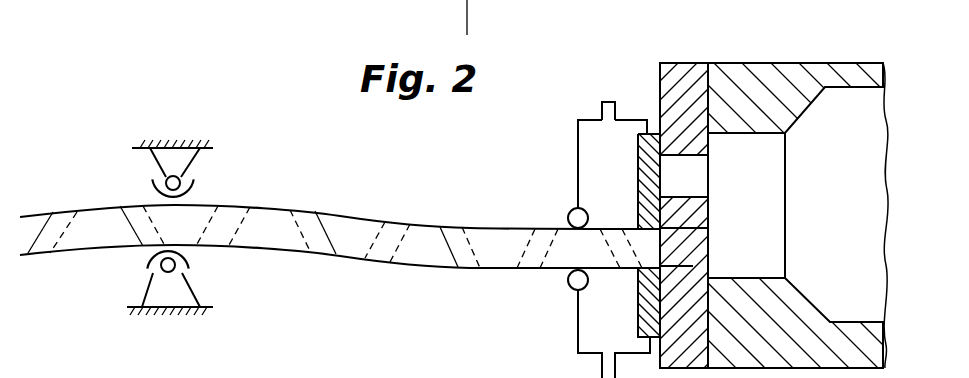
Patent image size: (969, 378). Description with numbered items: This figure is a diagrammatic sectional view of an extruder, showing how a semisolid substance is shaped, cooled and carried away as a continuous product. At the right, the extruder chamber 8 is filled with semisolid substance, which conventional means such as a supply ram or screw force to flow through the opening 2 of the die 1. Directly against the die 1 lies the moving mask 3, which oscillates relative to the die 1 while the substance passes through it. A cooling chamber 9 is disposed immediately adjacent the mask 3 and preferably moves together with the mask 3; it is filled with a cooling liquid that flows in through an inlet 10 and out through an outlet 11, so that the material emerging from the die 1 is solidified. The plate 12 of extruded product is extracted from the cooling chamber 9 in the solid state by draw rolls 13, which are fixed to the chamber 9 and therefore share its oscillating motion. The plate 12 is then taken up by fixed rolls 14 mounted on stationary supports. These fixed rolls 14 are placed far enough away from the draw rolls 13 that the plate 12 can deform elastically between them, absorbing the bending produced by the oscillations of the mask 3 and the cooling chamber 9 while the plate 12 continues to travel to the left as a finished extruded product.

The die 1 is at (686, 73).
The opening 2 is at (695, 240).
The moving mask 3 is at (638, 150).
The extruder chamber 8 is at (848, 218).
The cooling chamber 9 is at (577, 148).
The inlet 10 is at (609, 377).
The outlet 11 is at (606, 102).
The plate of extruded product 12 is at (530, 257).
The draw rolls 13 is at (569, 211).
The fixed rolls 14 is at (190, 272).